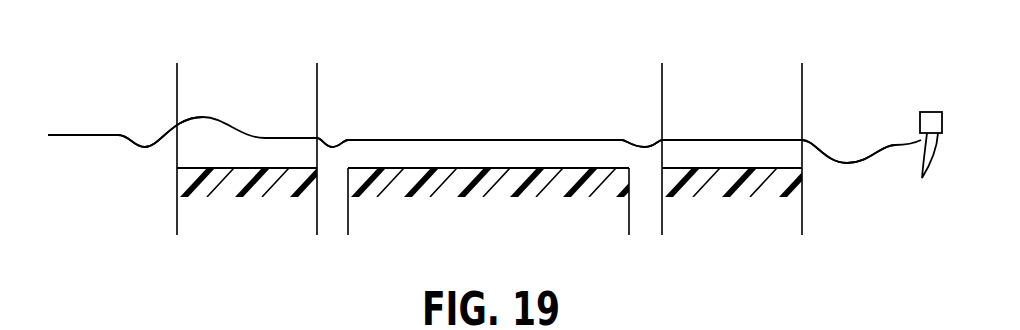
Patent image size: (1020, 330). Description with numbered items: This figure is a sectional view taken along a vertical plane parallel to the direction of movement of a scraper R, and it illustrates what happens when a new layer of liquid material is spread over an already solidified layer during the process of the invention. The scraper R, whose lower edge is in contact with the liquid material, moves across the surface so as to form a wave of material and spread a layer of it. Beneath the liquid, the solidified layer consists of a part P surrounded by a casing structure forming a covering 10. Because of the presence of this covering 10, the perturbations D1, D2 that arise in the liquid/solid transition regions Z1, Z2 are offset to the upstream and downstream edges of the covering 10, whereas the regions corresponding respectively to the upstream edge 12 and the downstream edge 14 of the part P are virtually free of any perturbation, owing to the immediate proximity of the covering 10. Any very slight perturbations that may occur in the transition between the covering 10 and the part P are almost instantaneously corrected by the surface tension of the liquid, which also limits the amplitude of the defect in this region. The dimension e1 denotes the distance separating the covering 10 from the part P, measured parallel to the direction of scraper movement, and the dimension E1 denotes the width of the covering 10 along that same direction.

The covering 10 is at (193, 213).
The upstream edge of the part 12 is at (345, 168).
The downstream edge of the part 14 is at (635, 163).
The perturbation D1 is at (136, 126).
The perturbation D2 is at (858, 138).
The width of the covering E1 is at (789, 73).
The distance separating the covering from the part e1 is at (695, 217).
The part P is at (488, 217).
The liquid/solid transition region Z1 is at (155, 169).
The liquid/solid transition region Z2 is at (825, 180).
The scraper R is at (932, 112).